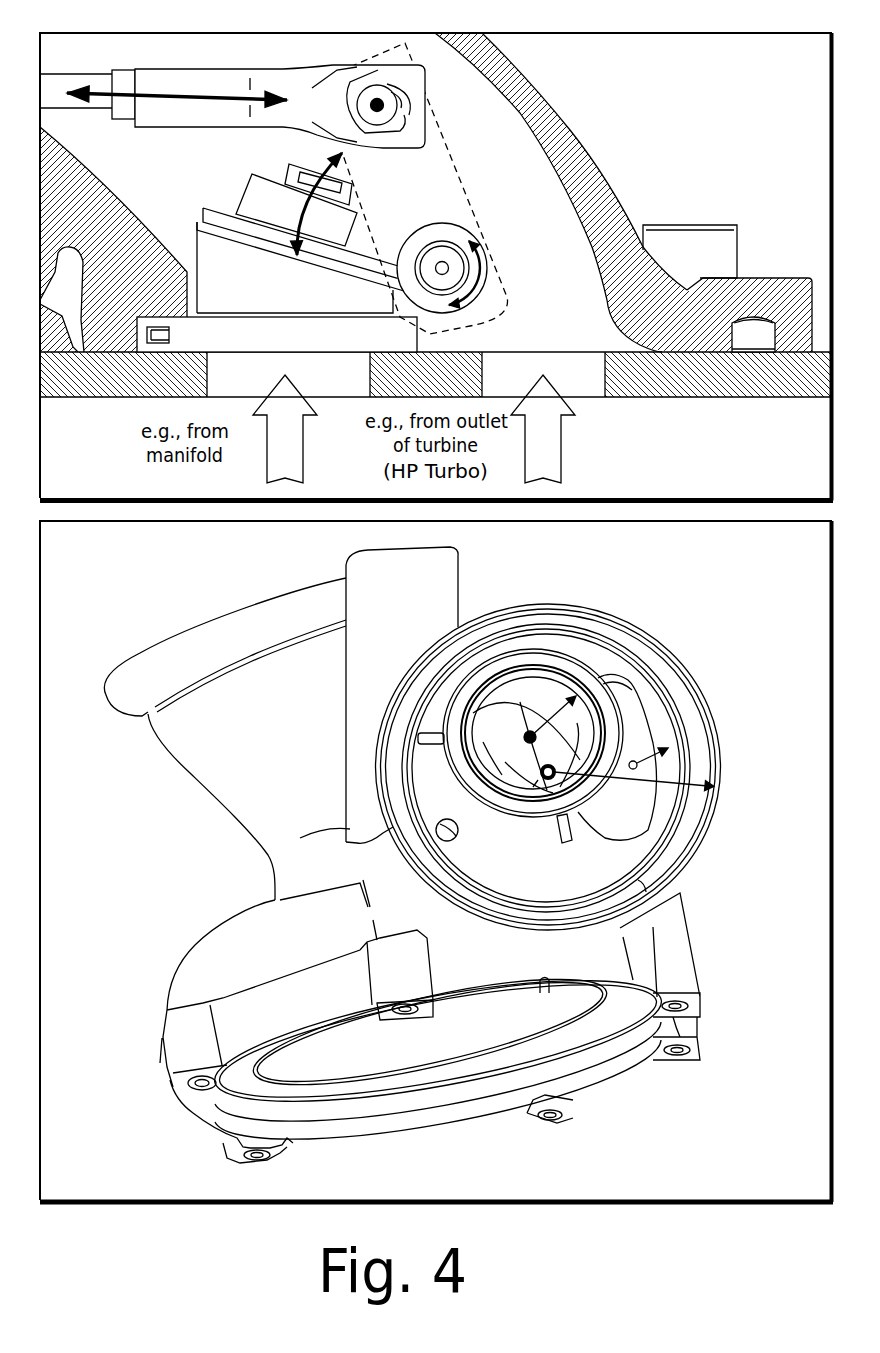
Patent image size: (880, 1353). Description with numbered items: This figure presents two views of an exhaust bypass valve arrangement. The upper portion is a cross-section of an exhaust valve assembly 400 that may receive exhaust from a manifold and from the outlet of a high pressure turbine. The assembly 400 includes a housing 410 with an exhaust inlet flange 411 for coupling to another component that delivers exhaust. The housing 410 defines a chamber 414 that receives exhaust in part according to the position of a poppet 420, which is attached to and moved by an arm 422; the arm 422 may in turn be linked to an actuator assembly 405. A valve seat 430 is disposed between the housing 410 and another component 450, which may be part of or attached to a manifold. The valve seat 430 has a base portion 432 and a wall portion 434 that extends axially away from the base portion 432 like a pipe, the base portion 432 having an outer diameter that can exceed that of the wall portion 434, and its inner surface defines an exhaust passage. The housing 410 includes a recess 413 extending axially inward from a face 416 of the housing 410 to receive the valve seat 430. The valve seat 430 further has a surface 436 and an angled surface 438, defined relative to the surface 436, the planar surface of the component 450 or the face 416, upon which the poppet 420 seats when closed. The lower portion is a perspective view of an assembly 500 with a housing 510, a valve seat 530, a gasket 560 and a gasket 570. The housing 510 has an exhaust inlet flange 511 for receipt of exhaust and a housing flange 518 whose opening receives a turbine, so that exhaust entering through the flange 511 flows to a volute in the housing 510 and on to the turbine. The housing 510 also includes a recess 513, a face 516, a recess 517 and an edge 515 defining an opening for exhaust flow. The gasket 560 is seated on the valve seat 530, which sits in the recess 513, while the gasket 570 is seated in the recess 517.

The exhaust valve assembly 400 is at (796, 68).
The actuator assembly 405 is at (248, 145).
The housing 410 is at (703, 328).
The exhaust inlet flange 411 is at (749, 278).
The recess 413 is at (187, 322).
The chamber 414 is at (547, 232).
The face 416 is at (660, 349).
The poppet 420 is at (214, 203).
The arm 422 is at (386, 215).
The valve seat 430 is at (305, 300).
The base portion 432 is at (303, 345).
The wall portion 434 is at (243, 275).
The surface 436 is at (207, 354).
The surface 438 is at (197, 222).
The component 450 is at (693, 385).
The assembly 500 is at (790, 573).
The housing 510 is at (492, 965).
The exhaust inlet flange 511 is at (682, 667).
The recess 513 is at (527, 817).
The edge 515 is at (593, 820).
The face 516 is at (455, 803).
The recess 517 is at (552, 910).
The housing flange 518 is at (597, 1087).
The valve seat 530 is at (547, 820).
The gasket 560 is at (542, 820).
The gasket 570 is at (643, 883).